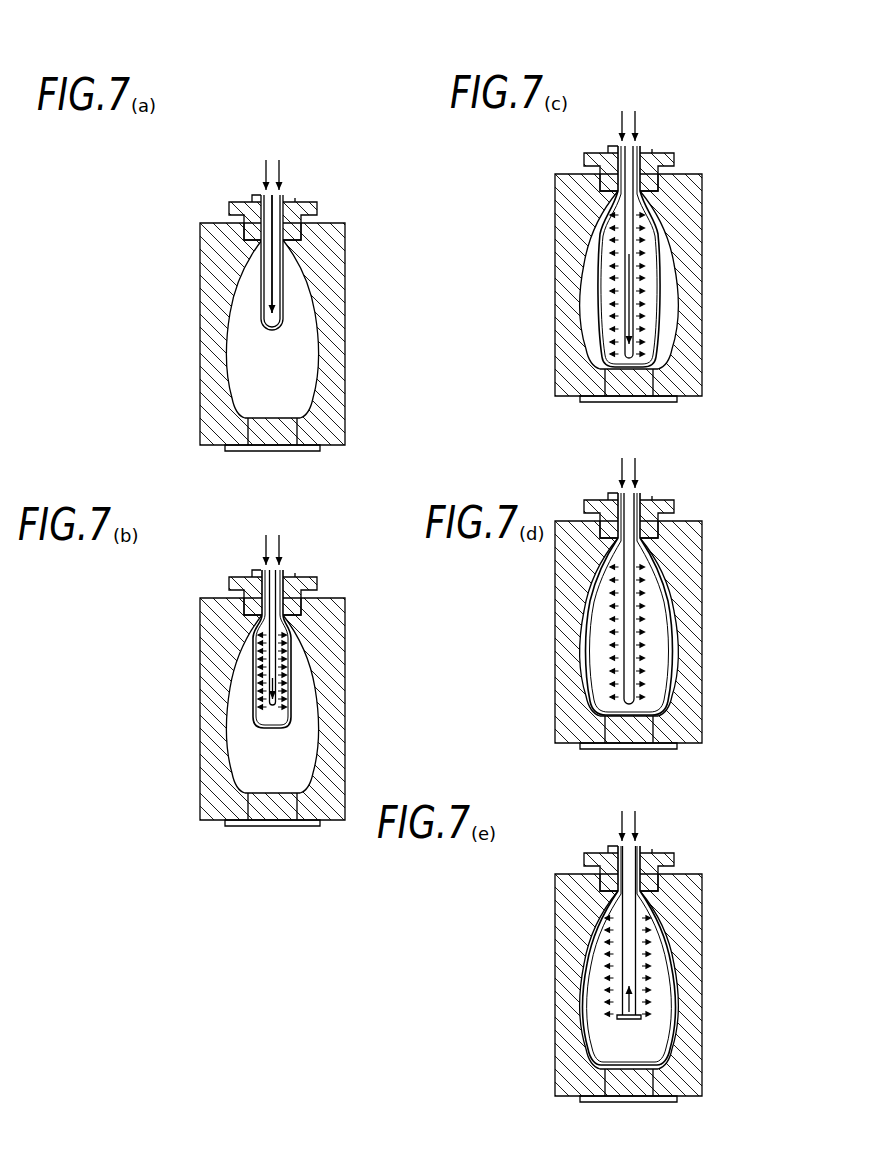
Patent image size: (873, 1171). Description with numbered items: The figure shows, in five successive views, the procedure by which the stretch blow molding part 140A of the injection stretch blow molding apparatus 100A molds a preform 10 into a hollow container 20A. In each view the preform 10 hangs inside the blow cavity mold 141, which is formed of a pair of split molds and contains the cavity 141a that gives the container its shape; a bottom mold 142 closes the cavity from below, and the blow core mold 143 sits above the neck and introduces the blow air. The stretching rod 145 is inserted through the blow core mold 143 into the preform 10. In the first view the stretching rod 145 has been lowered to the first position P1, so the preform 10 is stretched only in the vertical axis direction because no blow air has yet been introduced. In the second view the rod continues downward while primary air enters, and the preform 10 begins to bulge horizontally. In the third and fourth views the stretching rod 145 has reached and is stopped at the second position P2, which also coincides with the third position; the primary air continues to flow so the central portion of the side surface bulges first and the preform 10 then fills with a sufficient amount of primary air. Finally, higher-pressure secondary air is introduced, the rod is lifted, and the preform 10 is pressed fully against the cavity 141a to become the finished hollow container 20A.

In FIG. 7A, the preform 10 is at (222, 262).
In FIG. 7B, the preform 10 is at (226, 649).
In FIG. 7C, the preform 10 is at (585, 256).
In FIG. 7D, the preform 10 is at (591, 604).
In FIG. 7E, the preform 10 is at (587, 955).
In FIG. 7E, the hollow container 20A is at (629, 955).
In FIG. 7A, the injection stretch blow molding apparatus 100A is at (298, 295).
In FIG. 7B, the injection stretch blow molding apparatus 100A is at (298, 670).
In FIG. 7C, the injection stretch blow molding apparatus 100A is at (649, 246).
In FIG. 7D, the injection stretch blow molding apparatus 100A is at (649, 593).
In FIG. 7E, the injection stretch blow molding apparatus 100A is at (644, 946).
In FIG. 7A, the stretch blow molding part 140A is at (282, 317).
In FIG. 7B, the stretch blow molding part 140A is at (282, 692).
In FIG. 7C, the stretch blow molding part 140A is at (643, 269).
In FIG. 7D, the stretch blow molding part 140A is at (643, 616).
In FIG. 7E, the stretch blow molding part 140A is at (629, 969).
In FIG. 7A, the blow cavity mold 141 is at (301, 361).
In FIG. 7B, the blow cavity mold 141 is at (301, 736).
In FIG. 7C, the blow cavity mold 141 is at (658, 312).
In FIG. 7D, the blow cavity mold 141 is at (658, 659).
In FIG. 7E, the blow cavity mold 141 is at (656, 1012).
In FIG. 7A, the cavity 141a is at (313, 329).
In FIG. 7B, the cavity 141a is at (313, 704).
In FIG. 7C, the cavity 141a is at (670, 280).
In FIG. 7D, the cavity 141a is at (670, 627).
In FIG. 7E, the cavity 141a is at (629, 980).
In FIG. 7A, the bottom mold 142 is at (272, 459).
In FIG. 7B, the bottom mold 142 is at (272, 834).
In FIG. 7C, the bottom mold 142 is at (628, 410).
In FIG. 7D, the bottom mold 142 is at (628, 757).
In FIG. 7E, the bottom mold 142 is at (628, 1110).
In FIG. 7A, the blow core mold 143 is at (273, 187).
In FIG. 7B, the blow core mold 143 is at (273, 562).
In FIG. 7C, the blow core mold 143 is at (639, 139).
In FIG. 7D, the blow core mold 143 is at (639, 486).
In FIG. 7E, the blow core mold 143 is at (639, 839).
In FIG. 7A, the stretching rod 145 is at (332, 254).
In FIG. 7B, the stretching rod 145 is at (331, 637).
In FIG. 7C, the stretching rod 145 is at (691, 252).
In FIG. 7D, the stretching rod 145 is at (690, 598).
In FIG. 7E, the stretching rod 145 is at (687, 932).
In FIG. 7A, the first position P1 is at (337, 332).
In FIG. 7C, the second position P2 is at (714, 361).
In FIG. 7D, the second position P2 is at (714, 708).